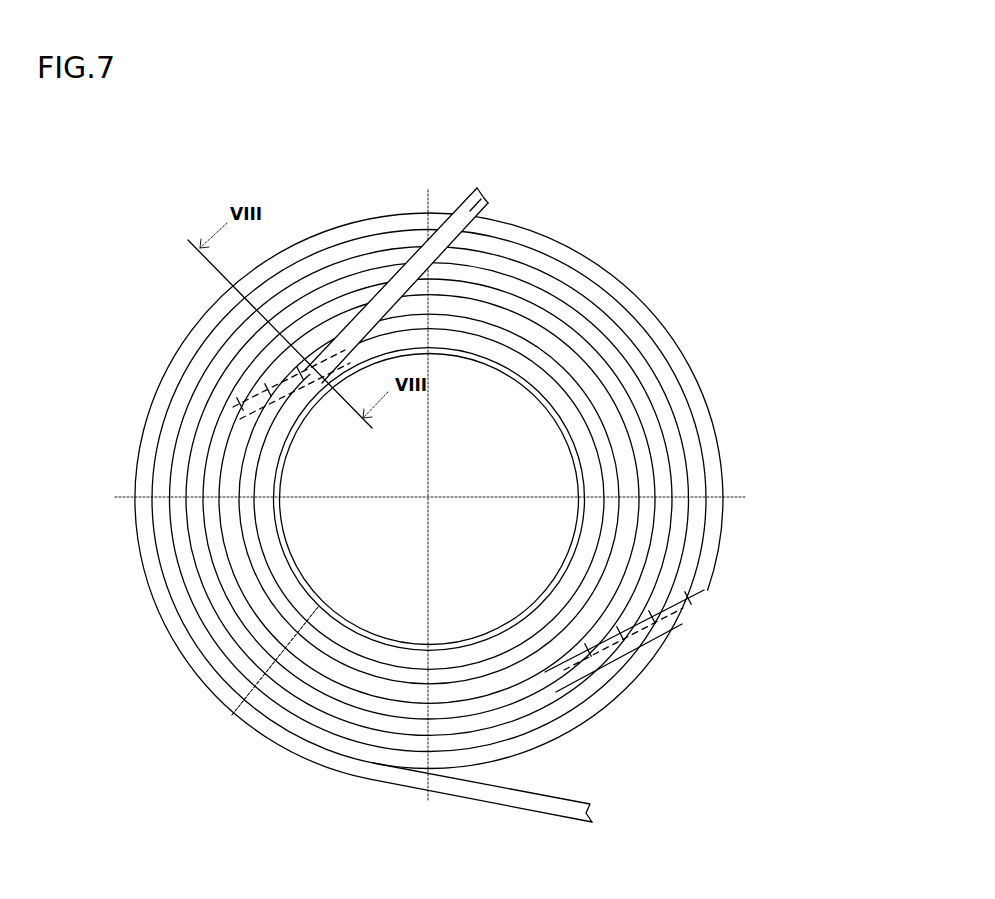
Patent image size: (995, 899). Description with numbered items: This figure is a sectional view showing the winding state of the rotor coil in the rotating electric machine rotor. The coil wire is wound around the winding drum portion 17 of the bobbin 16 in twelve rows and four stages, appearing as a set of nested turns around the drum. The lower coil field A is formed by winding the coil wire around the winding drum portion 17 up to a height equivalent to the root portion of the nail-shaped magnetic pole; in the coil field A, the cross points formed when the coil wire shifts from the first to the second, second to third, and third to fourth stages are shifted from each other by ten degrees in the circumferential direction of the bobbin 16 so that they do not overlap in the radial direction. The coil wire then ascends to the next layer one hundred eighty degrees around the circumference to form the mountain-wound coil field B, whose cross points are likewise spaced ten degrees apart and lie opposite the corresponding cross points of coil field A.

The bobbin 16 is at (482, 202).
The winding drum portion 17 is at (531, 390).
The coil field A is at (298, 636).
The coil field B is at (262, 684).